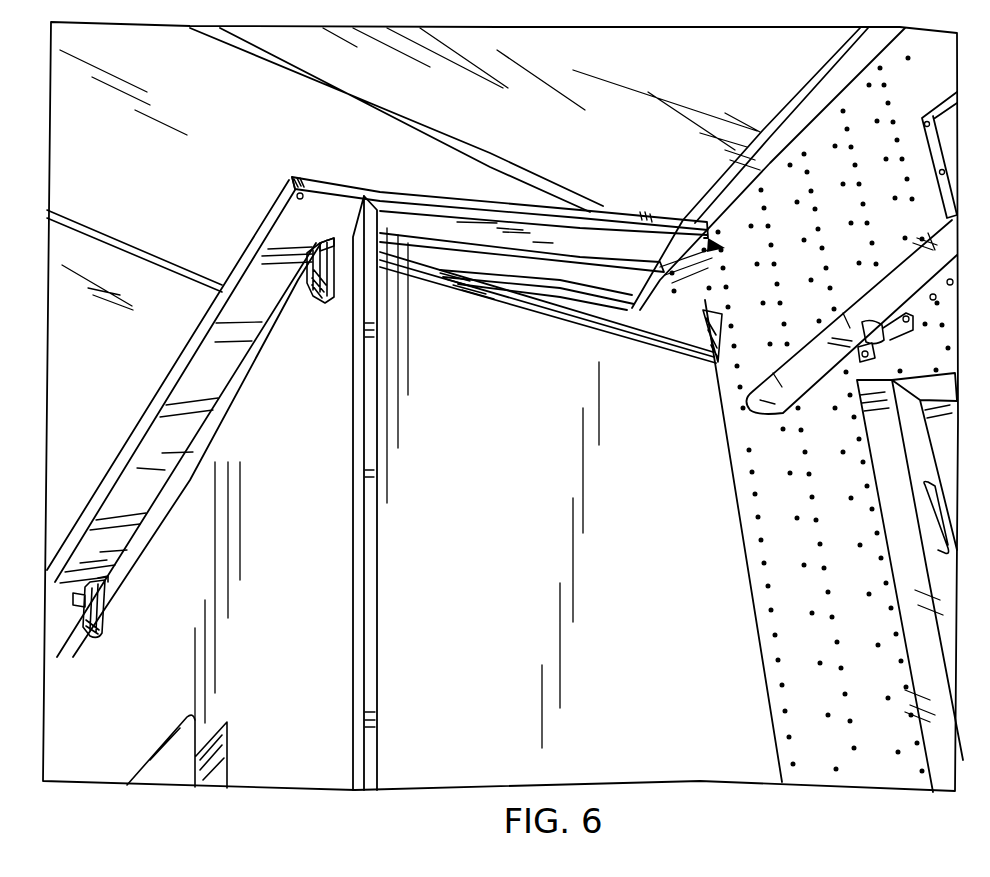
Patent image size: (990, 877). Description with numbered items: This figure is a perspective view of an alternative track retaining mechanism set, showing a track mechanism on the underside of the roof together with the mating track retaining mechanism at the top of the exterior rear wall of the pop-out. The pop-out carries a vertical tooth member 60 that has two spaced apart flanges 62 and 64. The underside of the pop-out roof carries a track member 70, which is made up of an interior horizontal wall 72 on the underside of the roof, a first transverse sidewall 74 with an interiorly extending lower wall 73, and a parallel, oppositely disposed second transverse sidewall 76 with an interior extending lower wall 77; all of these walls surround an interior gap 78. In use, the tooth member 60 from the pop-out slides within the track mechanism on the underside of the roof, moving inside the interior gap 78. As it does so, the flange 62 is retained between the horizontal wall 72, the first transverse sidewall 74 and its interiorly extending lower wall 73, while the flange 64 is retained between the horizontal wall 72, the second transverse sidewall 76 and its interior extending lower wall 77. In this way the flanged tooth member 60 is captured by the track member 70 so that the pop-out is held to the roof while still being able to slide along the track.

The vertical tooth member 60 is at (328, 300).
The flange 62 is at (330, 243).
The flange 64 is at (293, 255).
The track member 70 is at (463, 239).
The interior horizontal wall 72 is at (307, 257).
The interiorly extending lower wall 73 is at (402, 242).
The first transverse sidewall 74 is at (486, 270).
The second transverse sidewall 76 is at (278, 253).
The interior extending lower wall 77 is at (293, 263).
The interior gap 78 is at (583, 275).